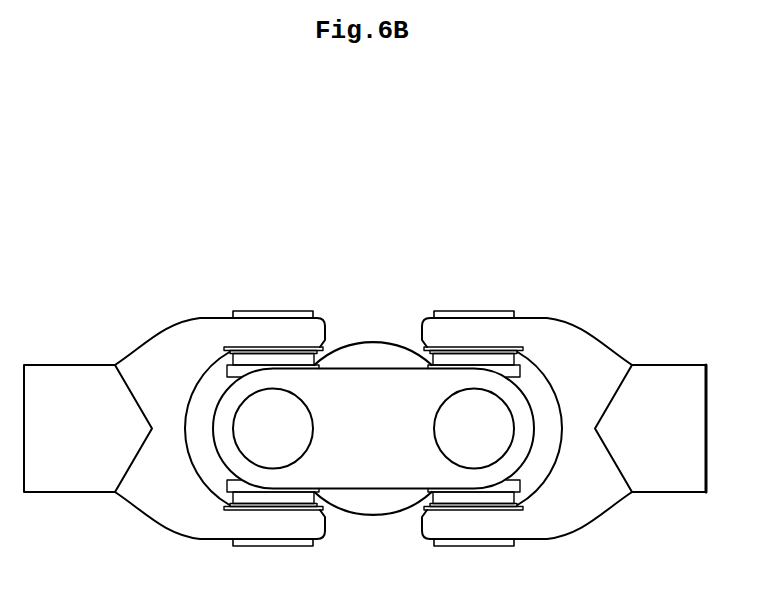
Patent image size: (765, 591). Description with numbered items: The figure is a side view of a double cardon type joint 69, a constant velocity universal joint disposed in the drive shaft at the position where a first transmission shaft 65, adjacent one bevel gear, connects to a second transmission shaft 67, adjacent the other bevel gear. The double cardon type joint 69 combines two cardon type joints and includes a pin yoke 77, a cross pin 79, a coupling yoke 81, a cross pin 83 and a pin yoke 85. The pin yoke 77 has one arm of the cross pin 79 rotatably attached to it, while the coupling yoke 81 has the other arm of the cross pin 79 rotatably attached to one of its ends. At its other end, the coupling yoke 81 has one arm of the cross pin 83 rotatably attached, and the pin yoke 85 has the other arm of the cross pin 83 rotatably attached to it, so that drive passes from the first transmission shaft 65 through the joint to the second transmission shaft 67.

The first transmission shaft 65 is at (60, 373).
The second transmission shaft 67 is at (677, 373).
The double cardon type joint 69 is at (537, 275).
The pin yoke 77 is at (273, 325).
The cross pin 79 is at (342, 352).
The coupling yoke 81 is at (372, 360).
The cross pin 83 is at (410, 355).
The pin yoke 85 is at (487, 327).